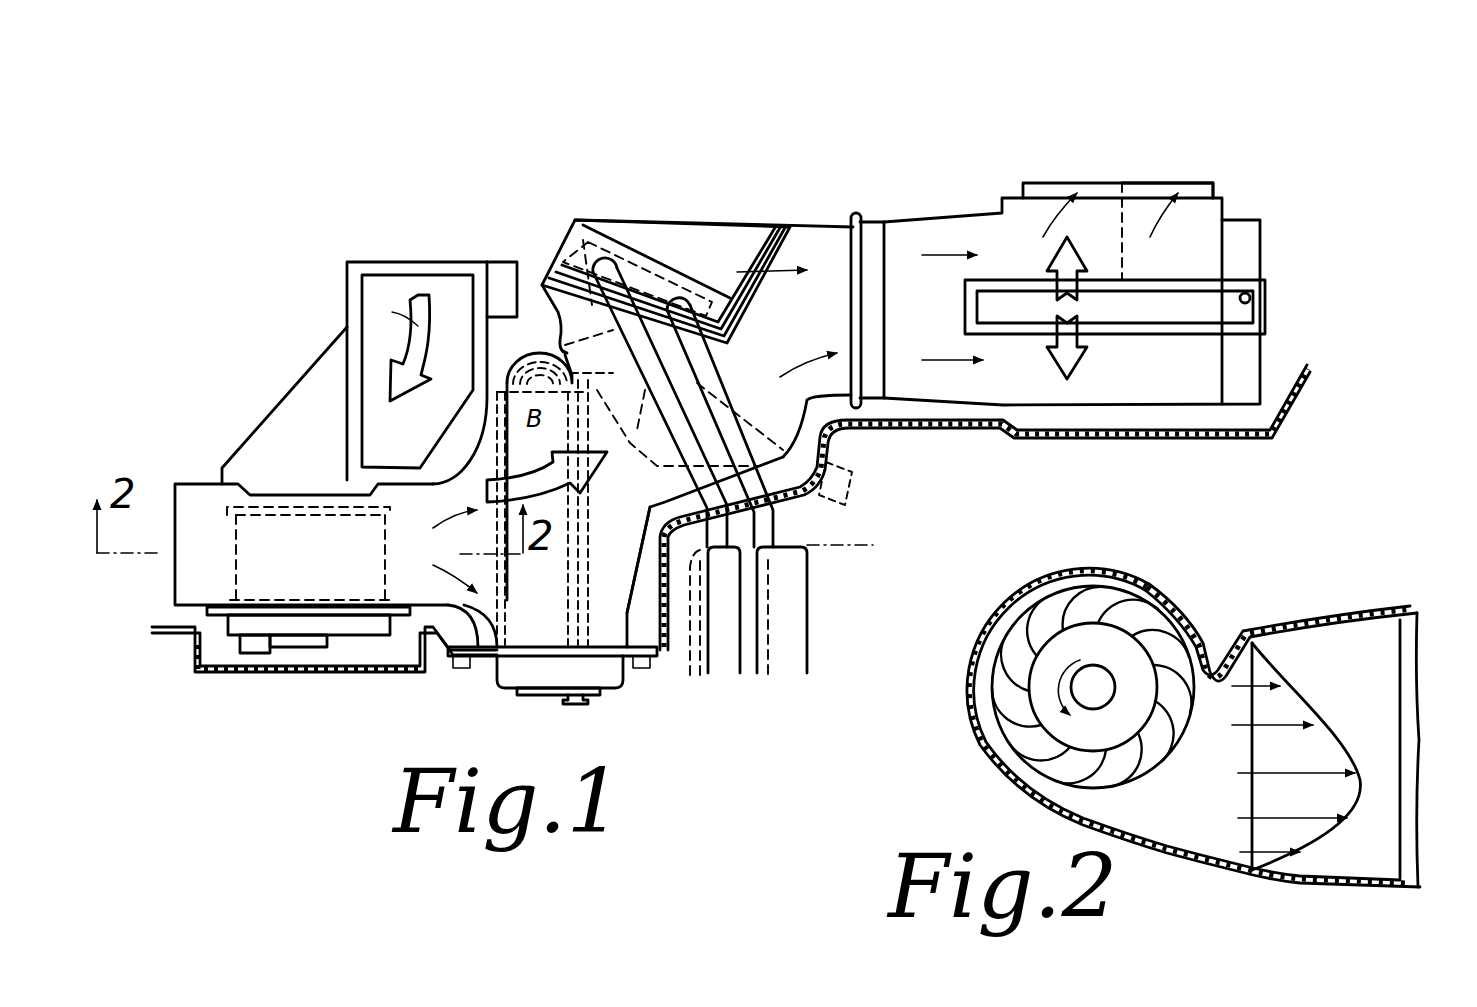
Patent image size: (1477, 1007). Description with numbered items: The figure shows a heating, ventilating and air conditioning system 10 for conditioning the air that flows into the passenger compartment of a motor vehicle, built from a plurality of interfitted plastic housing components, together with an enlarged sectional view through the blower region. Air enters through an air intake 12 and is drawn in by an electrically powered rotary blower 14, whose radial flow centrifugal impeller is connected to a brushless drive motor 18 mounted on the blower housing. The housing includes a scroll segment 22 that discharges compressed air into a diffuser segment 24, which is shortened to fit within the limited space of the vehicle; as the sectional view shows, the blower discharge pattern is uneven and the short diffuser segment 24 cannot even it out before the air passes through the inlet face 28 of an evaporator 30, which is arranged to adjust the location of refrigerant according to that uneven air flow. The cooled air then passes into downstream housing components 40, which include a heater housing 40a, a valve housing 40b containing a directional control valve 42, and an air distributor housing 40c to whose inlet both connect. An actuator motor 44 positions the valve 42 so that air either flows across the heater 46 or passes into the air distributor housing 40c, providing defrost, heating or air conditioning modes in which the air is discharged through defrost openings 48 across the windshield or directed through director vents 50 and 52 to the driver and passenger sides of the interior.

In FIG. 1, the heating, ventilating and air conditioning system 10 is at (723, 214).
In FIG. 1, the air intake 12 is at (393, 290).
In FIG. 1, the rotary blower 14 is at (243, 575).
In FIG. 2, the rotary blower 14 is at (1137, 600).
In FIG. 1, the brushless drive motor 18 is at (305, 630).
In FIG. 2, the scroll segment 22 is at (1045, 578).
In FIG. 2, the diffuser segment 24 is at (1275, 628).
In FIG. 1, the inlet face 28 is at (468, 625).
In FIG. 2, the inlet face 28 is at (1394, 634).
In FIG. 1, the evaporator 30 is at (590, 622).
In FIG. 2, the evaporator 30 is at (1403, 655).
In FIG. 1, the downstream housing components 40 is at (813, 226).
In FIG. 1, the heater housing 40a is at (658, 228).
In FIG. 1, the valve housing 40b is at (793, 420).
In FIG. 1, the air distributor housing 40c is at (928, 235).
In FIG. 1, the directional control valve 42 is at (653, 475).
In FIG. 1, the actuator motor 44 is at (845, 503).
In FIG. 1, the heater 46 is at (583, 240).
In FIG. 1, the defrost openings 48 is at (1253, 298).
In FIG. 1, the director vent 50 is at (1042, 185).
In FIG. 1, the director vent 52 is at (1195, 185).